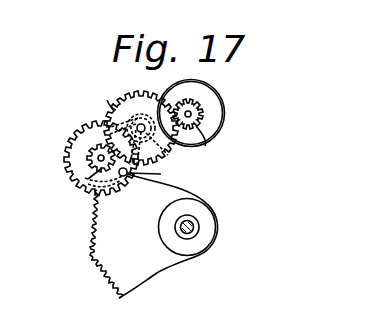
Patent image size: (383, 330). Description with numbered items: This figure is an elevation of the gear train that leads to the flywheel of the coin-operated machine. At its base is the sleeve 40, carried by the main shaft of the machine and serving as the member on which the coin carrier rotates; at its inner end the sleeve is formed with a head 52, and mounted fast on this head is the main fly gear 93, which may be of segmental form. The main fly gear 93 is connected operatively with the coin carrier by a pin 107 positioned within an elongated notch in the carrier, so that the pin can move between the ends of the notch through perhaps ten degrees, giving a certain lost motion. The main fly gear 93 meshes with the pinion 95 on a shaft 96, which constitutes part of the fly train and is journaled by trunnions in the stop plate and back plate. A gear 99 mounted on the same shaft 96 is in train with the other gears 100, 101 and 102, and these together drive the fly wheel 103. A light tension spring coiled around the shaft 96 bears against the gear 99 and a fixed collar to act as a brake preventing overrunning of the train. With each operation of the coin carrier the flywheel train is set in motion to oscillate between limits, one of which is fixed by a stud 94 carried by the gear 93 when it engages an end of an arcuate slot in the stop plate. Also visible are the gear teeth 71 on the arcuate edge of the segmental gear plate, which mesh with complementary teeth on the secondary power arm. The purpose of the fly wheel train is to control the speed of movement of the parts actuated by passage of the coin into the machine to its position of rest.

The gear 100 is at (141, 128).
The gear 101 is at (97, 98).
The gear 102 is at (202, 148).
The fly wheel 103 is at (214, 96).
The gear 99 is at (85, 140).
The shaft 96 is at (96, 159).
The pinion 95 is at (88, 179).
The stud 94 is at (152, 171).
The gear teeth 71 is at (93, 226).
The main fly gear 93 is at (96, 258).
The pin 107 is at (138, 219).
The head 52 is at (215, 235).
The sleeve 40 is at (187, 237).